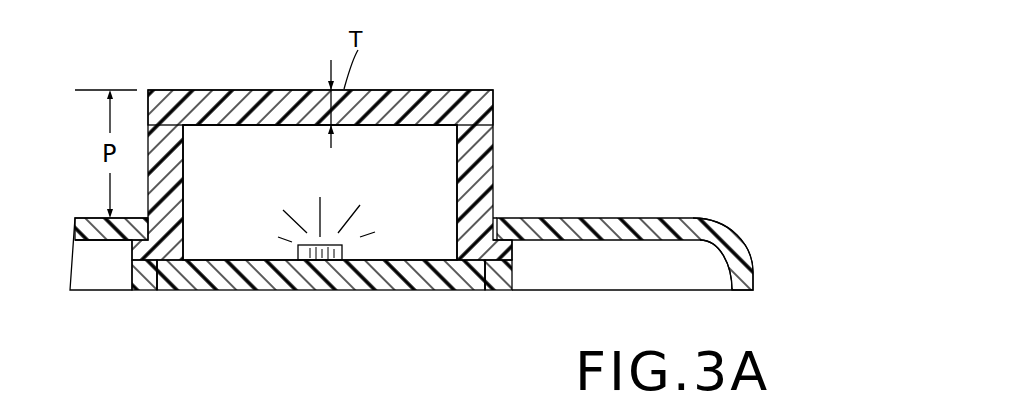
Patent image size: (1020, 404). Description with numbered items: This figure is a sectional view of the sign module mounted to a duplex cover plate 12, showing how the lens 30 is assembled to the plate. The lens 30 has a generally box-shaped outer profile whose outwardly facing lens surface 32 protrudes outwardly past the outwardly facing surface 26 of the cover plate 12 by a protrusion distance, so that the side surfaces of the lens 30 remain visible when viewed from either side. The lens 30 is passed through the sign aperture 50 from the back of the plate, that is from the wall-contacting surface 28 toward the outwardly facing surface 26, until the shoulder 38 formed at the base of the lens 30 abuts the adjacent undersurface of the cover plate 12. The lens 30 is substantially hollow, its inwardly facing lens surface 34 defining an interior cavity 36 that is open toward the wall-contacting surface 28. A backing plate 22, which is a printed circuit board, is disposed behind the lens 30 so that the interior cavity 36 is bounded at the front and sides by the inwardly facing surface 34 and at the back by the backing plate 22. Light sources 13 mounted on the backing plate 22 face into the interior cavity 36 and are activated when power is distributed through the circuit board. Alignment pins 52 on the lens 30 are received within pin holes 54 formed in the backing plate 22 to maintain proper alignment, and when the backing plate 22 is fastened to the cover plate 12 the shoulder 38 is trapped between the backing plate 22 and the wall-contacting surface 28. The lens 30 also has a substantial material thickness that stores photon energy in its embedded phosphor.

The duplex cover plate 12 is at (102, 216).
The light sources 13 is at (322, 262).
The backing plate 22 is at (392, 280).
The outwardly facing surface 26 is at (653, 218).
The wall-contacting surface 28 is at (748, 290).
The lens 30 is at (461, 80).
The outwardly facing lens surface 32 is at (233, 89).
The inwardly facing lens surface 34 is at (228, 126).
The interior cavity 36 is at (375, 150).
The shoulder 38 is at (132, 250).
The sign aperture 50 is at (500, 209).
The alignment pins 52 is at (167, 277).
The pin holes 54 is at (159, 292).